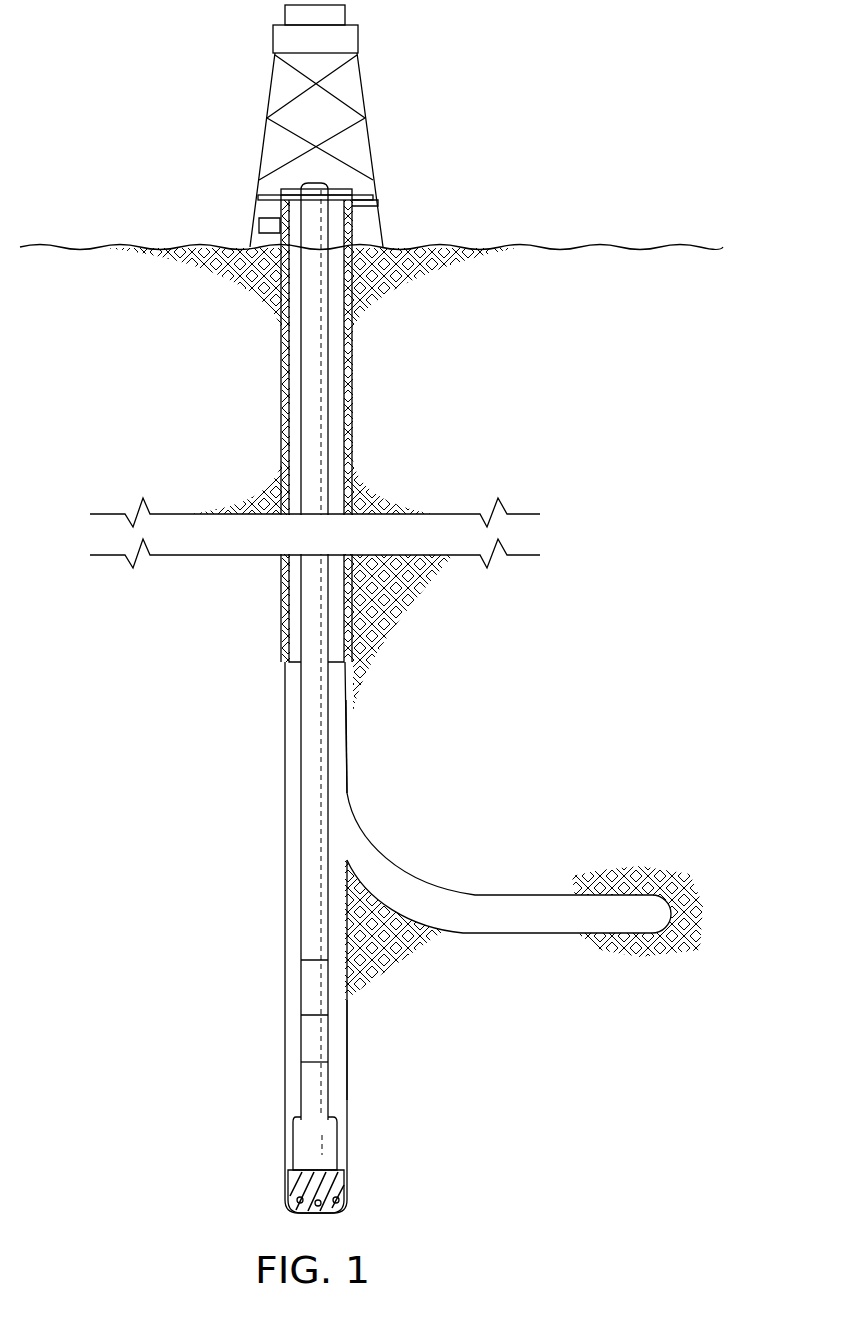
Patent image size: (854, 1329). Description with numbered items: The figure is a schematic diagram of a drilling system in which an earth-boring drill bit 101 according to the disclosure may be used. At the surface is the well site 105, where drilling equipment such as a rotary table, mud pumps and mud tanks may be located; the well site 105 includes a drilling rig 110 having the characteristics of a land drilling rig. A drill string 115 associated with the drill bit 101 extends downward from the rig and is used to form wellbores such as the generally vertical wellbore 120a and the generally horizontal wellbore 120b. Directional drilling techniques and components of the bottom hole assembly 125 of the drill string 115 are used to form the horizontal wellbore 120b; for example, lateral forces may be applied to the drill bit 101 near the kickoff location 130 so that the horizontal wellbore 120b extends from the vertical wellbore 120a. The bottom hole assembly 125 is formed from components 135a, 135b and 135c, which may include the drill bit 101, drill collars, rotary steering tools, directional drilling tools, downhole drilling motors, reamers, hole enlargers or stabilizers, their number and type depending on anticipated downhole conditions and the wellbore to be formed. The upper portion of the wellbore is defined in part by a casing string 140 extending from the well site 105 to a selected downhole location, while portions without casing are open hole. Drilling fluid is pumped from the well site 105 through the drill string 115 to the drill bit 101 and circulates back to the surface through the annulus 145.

The drilling rig 110 is at (203, 58).
The well site 105 is at (362, 221).
The drill string 115 is at (331, 367).
The annulus 145 is at (290, 376).
The casing string 140 is at (282, 426).
The kickoff location 130 is at (346, 768).
The generally vertical wellbore 120a is at (281, 787).
The generally horizontal wellbore 120b is at (531, 877).
The bottom hole assembly 125 is at (362, 1070).
The component of bottom hole assembly 135a is at (305, 985).
The component of bottom hole assembly 135b is at (305, 1040).
The component of bottom hole assembly 135c is at (305, 1087).
The earth-boring drill bit 101 is at (282, 1188).